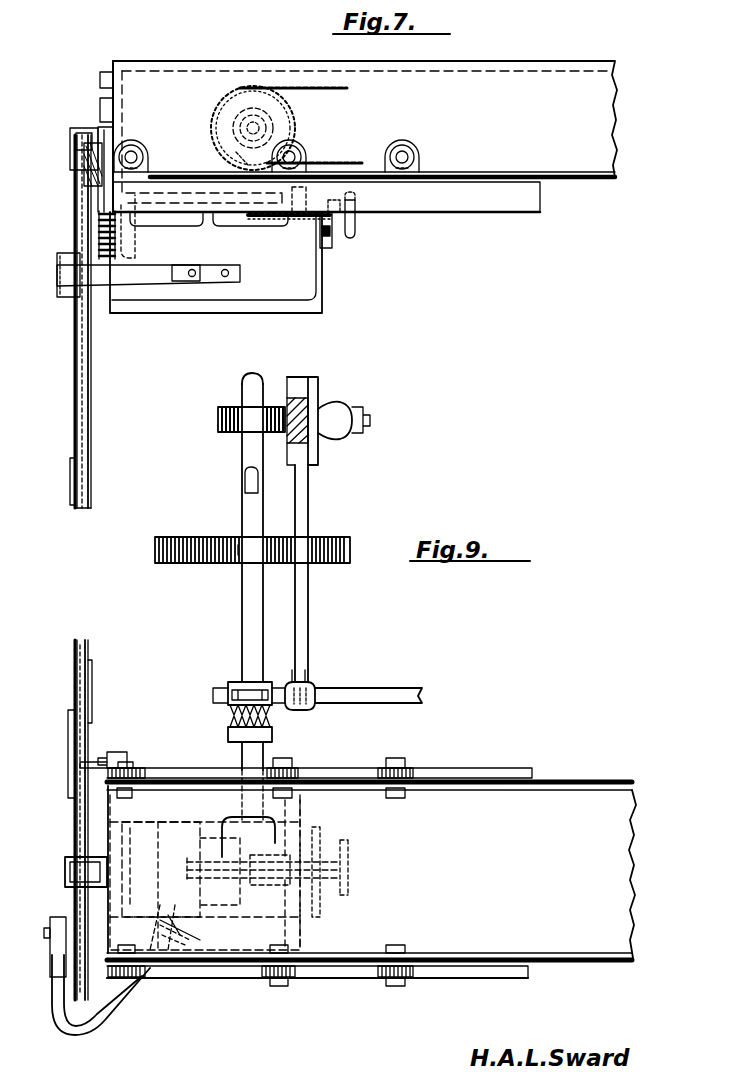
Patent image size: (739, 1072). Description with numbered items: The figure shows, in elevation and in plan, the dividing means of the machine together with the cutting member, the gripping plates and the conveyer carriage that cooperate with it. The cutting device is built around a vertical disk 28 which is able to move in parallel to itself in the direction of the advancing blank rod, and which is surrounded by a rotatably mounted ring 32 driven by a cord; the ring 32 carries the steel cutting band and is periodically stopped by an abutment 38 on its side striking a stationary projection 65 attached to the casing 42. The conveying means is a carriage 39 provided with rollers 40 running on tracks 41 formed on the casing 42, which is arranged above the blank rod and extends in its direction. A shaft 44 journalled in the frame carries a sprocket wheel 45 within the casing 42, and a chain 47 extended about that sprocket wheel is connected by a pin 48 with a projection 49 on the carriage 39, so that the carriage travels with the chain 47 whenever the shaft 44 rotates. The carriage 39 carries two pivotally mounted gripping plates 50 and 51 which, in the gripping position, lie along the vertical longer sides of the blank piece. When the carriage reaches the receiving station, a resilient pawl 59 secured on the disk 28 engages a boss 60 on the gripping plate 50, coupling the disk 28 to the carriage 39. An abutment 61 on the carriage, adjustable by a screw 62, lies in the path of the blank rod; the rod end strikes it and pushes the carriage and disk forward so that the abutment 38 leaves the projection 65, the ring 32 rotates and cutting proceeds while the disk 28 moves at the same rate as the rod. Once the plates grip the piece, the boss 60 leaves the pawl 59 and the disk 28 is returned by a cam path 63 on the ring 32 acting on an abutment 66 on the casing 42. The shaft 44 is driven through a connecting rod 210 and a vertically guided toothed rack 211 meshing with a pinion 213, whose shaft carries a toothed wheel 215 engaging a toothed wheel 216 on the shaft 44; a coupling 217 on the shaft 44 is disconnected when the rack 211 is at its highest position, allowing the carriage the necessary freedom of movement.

In FIG. 7, the vertical disk 28 is at (74, 399).
In FIG. 9, the vertical disk 28 is at (74, 686).
In FIG. 7, the ring 32 is at (90, 424).
In FIG. 9, the ring 32 is at (74, 815).
In FIG. 7, the abutment 38 is at (69, 477).
In FIG. 9, the abutment 38 is at (68, 740).
In FIG. 7, the carriage 39 is at (458, 206).
In FIG. 9, the carriage 39 is at (466, 773).
In FIG. 7, the rollers 40 is at (143, 151).
In FIG. 9, the rollers 40 is at (406, 796).
In FIG. 7, the tracks 41 is at (579, 170).
In FIG. 9, the tracks 41 is at (576, 789).
In FIG. 7, the casing 42 is at (550, 66).
In FIG. 9, the casing 42 is at (372, 872).
In FIG. 7, the shaft 44 is at (263, 110).
In FIG. 9, the shaft 44 is at (241, 610).
In FIG. 7, the sprocket wheel 45 is at (242, 92).
In FIG. 7, the chain 47 is at (322, 96).
In FIG. 7, the pin 48 is at (236, 158).
In FIG. 7, the projection 49 is at (240, 184).
In FIG. 7, the gripping plate 50 is at (290, 291).
In FIG. 9, the gripping plate 50 is at (228, 935).
In FIG. 9, the gripping plate 51 is at (172, 822).
In FIG. 7, the resilient pawl 59 is at (58, 279).
In FIG. 9, the resilient pawl 59 is at (90, 1038).
In FIG. 7, the boss 60 is at (187, 279).
In FIG. 9, the boss 60 is at (170, 935).
In FIG. 7, the abutment 61 is at (327, 250).
In FIG. 9, the abutment 61 is at (322, 845).
In FIG. 7, the screw 62 is at (334, 240).
In FIG. 9, the screw 62 is at (349, 887).
In FIG. 9, the cam path 63 is at (88, 985).
In FIG. 7, the projection 65 is at (72, 146).
In FIG. 9, the projection 65 is at (66, 862).
In FIG. 7, the abutment 66 is at (100, 168).
In FIG. 9, the connecting rod 210 is at (347, 438).
In FIG. 9, the toothed rack 211 is at (312, 404).
In FIG. 9, the pinion 213 is at (222, 434).
In FIG. 9, the toothed wheel 215 is at (175, 563).
In FIG. 9, the toothed wheel 216 is at (233, 537).
In FIG. 9, the coupling 217 is at (270, 712).